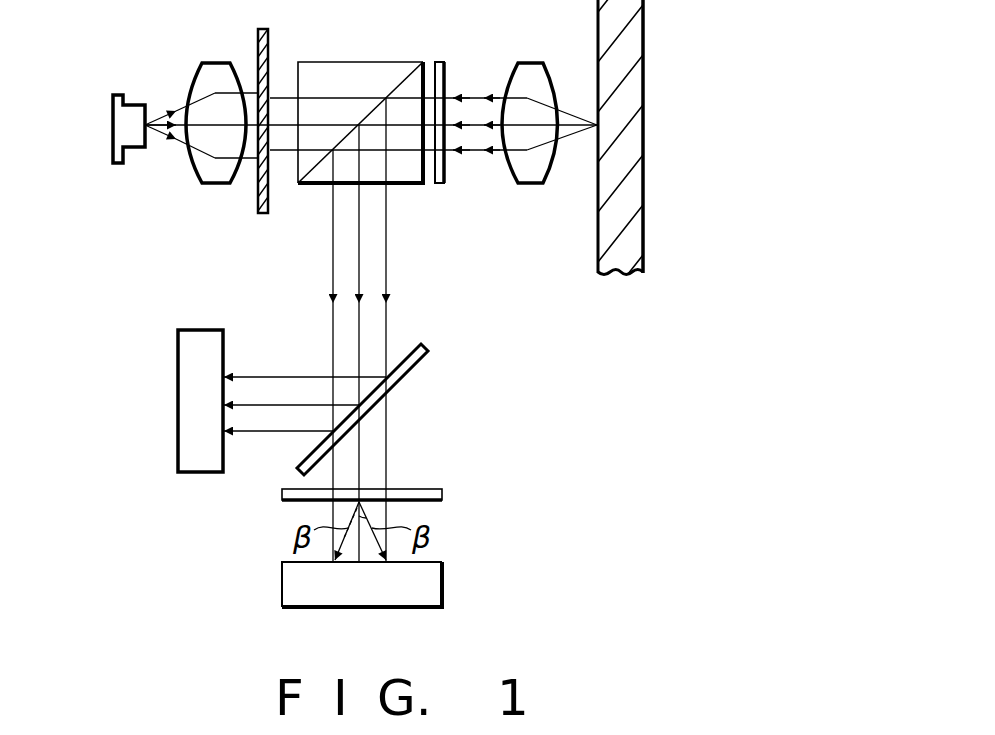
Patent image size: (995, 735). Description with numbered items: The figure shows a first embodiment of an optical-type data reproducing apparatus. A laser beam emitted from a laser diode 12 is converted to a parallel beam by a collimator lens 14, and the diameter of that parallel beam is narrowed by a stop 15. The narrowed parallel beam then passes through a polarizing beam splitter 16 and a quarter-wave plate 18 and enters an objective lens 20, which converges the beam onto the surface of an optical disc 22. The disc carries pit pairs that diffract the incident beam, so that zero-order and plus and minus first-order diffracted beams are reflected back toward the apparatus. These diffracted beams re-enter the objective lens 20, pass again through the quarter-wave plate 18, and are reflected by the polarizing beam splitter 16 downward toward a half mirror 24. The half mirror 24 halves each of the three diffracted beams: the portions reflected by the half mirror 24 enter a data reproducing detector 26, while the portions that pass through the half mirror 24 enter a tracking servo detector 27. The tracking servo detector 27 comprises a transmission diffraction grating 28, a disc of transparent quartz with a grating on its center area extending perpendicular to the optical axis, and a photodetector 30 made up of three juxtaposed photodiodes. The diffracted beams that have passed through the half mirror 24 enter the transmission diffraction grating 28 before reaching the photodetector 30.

The laser diode 12 is at (112, 140).
The collimator lens 14 is at (198, 83).
The stop 15 is at (257, 177).
The polarizing beam splitter 16 is at (337, 65).
The λ/4 plate 18 is at (443, 70).
The objective lens 20 is at (523, 172).
The optical disc 22 is at (643, 25).
The half mirror 24 is at (407, 370).
The data reproducing detector 26 is at (178, 437).
The tracking servo detector 27 is at (482, 496).
The transmission diffraction grating 28 is at (418, 489).
The photodetector 30 is at (442, 585).